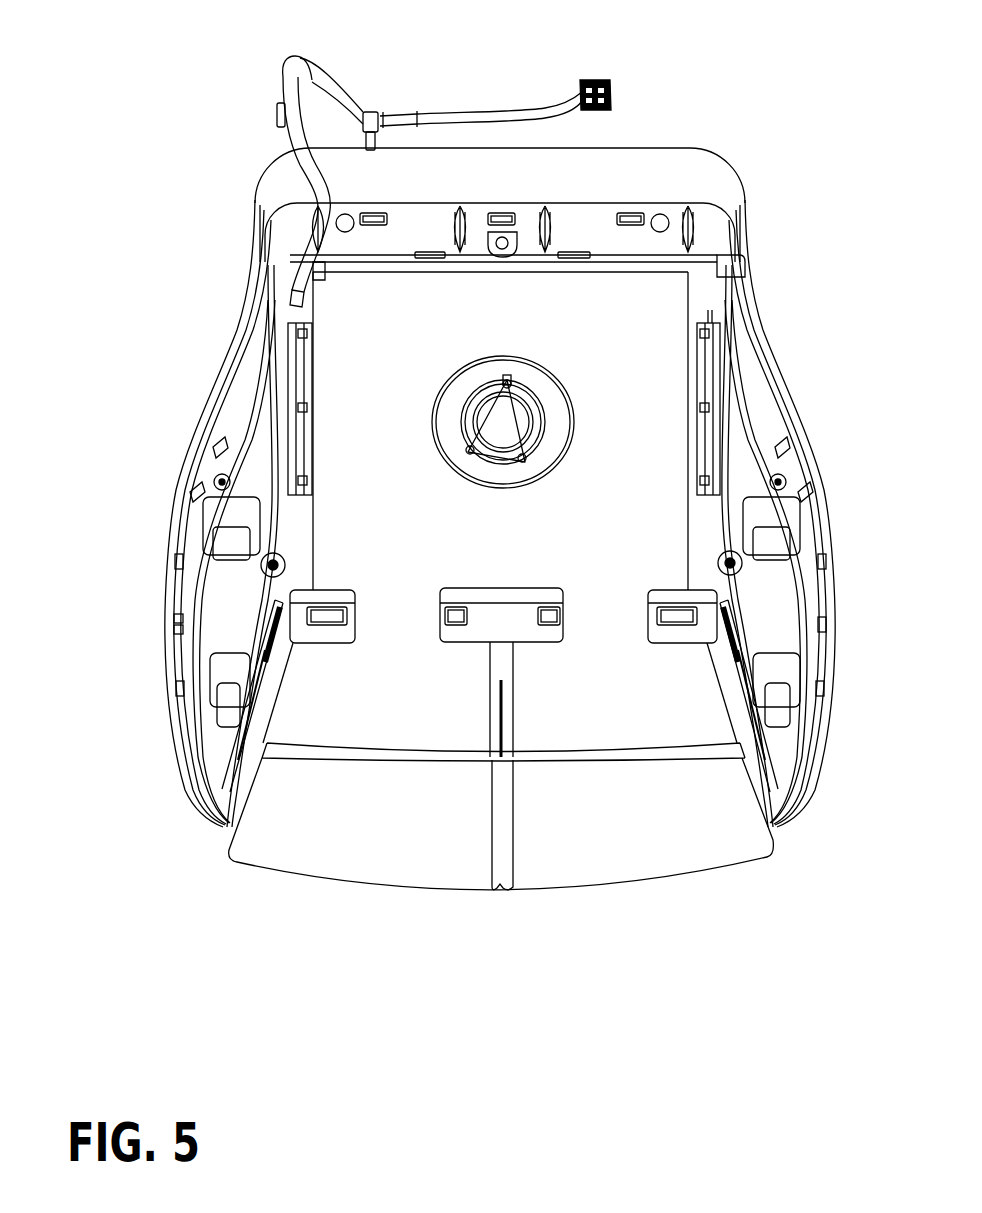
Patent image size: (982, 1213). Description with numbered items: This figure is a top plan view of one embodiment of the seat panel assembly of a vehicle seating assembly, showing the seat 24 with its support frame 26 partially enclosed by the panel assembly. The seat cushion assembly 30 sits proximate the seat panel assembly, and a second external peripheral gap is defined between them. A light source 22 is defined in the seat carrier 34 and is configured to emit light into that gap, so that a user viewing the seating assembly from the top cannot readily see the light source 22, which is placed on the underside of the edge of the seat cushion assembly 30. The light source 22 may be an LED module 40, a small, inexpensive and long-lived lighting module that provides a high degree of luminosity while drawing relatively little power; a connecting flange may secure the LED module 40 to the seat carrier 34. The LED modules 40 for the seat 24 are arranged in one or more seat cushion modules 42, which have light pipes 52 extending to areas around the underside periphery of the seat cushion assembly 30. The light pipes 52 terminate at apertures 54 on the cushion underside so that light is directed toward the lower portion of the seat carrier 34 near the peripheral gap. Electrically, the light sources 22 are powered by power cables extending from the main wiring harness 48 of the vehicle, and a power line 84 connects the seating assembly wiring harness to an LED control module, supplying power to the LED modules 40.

The light source 22 is at (173, 618).
The seat 24 is at (527, 907).
The support frame 26 is at (718, 243).
The seat cushion assembly 30 is at (788, 425).
The seat carrier 34 is at (307, 590).
The LED module 40 is at (237, 600).
The seat cushion module 42 is at (468, 534).
The main wiring harness 48 is at (588, 80).
The light pipe 52 is at (174, 625).
The aperture 54 is at (174, 636).
The power line 84 is at (397, 113).